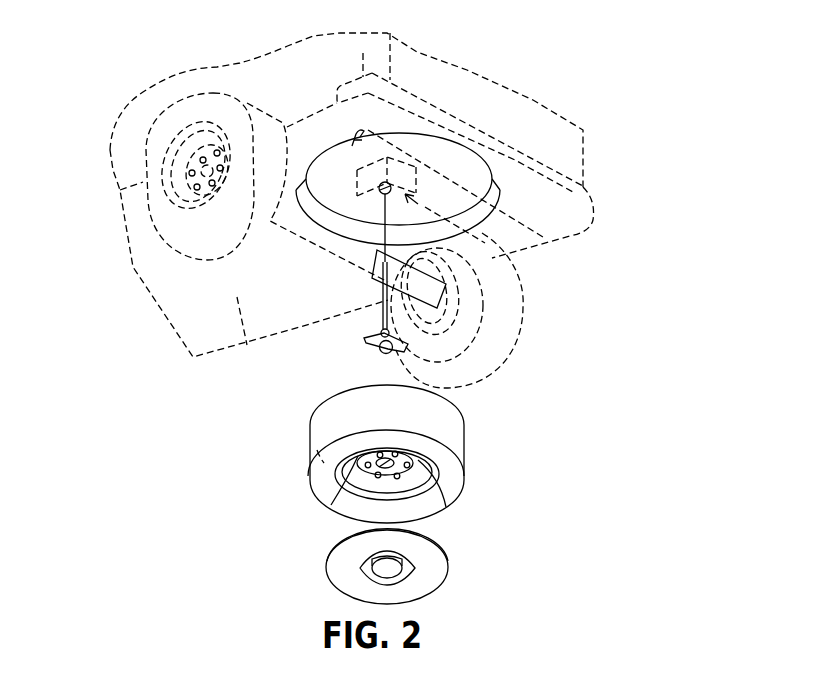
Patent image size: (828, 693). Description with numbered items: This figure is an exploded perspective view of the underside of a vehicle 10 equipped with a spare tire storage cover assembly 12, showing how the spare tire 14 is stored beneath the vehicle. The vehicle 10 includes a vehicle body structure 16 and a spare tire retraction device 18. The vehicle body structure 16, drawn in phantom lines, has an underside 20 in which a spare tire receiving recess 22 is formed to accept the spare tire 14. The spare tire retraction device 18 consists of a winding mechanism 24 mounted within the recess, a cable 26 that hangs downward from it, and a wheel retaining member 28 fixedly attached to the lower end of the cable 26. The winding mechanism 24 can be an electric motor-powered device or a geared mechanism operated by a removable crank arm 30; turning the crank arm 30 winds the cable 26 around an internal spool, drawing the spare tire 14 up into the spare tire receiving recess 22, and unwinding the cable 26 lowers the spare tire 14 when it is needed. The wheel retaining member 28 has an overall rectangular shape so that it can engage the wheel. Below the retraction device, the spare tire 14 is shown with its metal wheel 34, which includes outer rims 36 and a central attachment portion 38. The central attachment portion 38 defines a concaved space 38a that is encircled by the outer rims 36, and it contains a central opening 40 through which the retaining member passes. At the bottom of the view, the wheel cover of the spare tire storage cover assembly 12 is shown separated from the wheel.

The vehicle 10 is at (636, 127).
The spare tire storage cover assembly 12 is at (459, 549).
The spare tire 14 is at (322, 478).
The vehicle body structure 16 is at (588, 203).
The spare tire retraction device 18 is at (485, 230).
The underside 20 is at (247, 335).
The spare tire receiving recess 22 is at (440, 177).
The winding mechanism 24 is at (429, 154).
The cable 26 is at (382, 270).
The wheel retaining member 28 is at (366, 344).
The removable crank arm 30 is at (376, 136).
The metal wheel 34 is at (368, 503).
The outer rims 36 is at (436, 505).
The central attachment portion 38 is at (417, 472).
The concaved space 38a is at (331, 505).
The central opening 40 is at (404, 458).